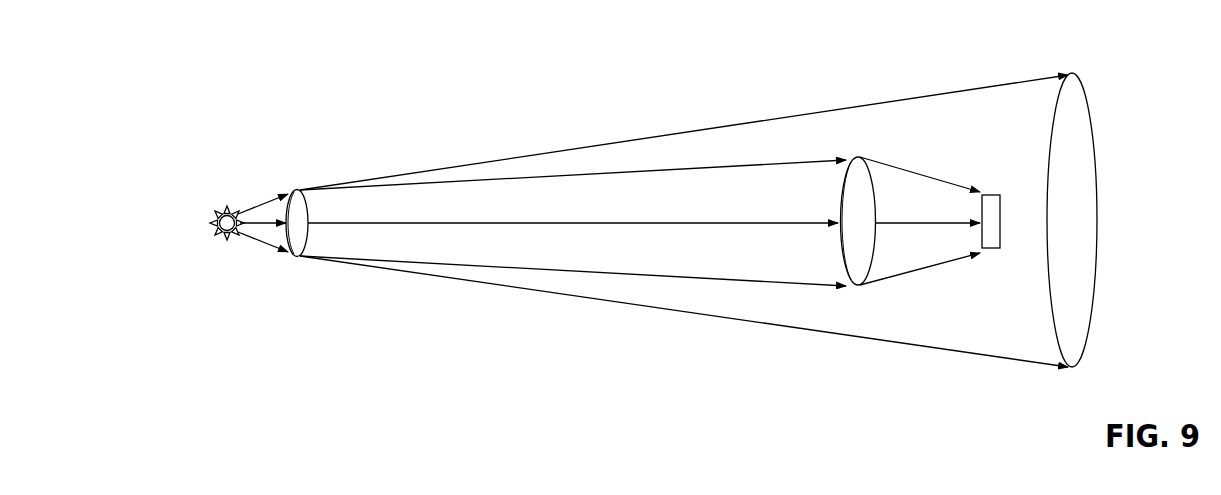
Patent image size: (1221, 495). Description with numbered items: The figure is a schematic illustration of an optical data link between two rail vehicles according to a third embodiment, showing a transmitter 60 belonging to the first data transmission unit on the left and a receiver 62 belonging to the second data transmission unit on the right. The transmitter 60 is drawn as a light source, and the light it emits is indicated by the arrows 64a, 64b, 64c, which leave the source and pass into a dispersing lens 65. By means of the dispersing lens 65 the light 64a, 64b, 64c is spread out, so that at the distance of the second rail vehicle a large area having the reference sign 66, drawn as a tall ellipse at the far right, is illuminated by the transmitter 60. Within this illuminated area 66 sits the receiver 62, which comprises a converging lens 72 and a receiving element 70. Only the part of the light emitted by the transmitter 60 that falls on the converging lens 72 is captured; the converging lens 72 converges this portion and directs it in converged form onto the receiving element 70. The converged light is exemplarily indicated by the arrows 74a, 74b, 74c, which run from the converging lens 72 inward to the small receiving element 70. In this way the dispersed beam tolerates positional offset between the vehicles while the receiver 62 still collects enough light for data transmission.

The transmitter 60 is at (197, 190).
The receiver 62 is at (882, 128).
The arrow indicating emitted light 64a is at (257, 207).
The arrow indicating emitted light 64b is at (263, 223).
The arrow indicating emitted light 64c is at (253, 237).
The dispersing lens 65 is at (303, 238).
The illuminated area 66 is at (1068, 140).
The receiving element 70 is at (990, 240).
The converging lens 72 is at (863, 202).
The arrow indicating converged light 74a is at (960, 183).
The arrow indicating converged light 74b is at (928, 223).
The arrow indicating converged light 74c is at (878, 282).